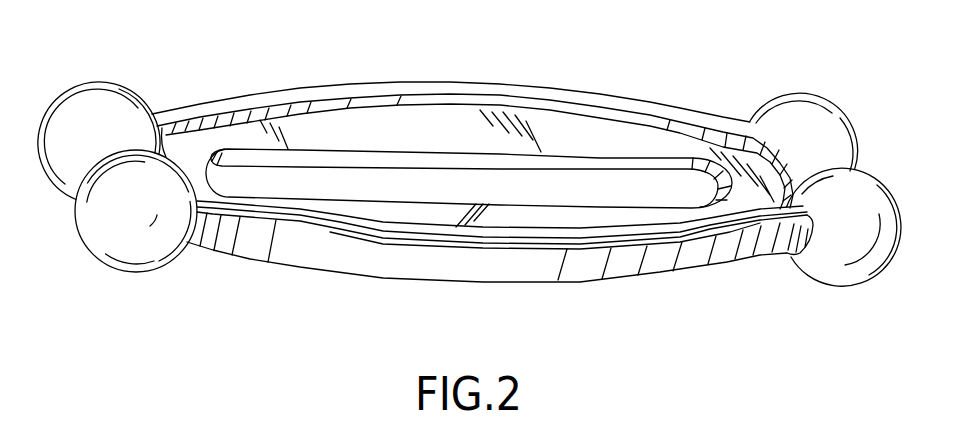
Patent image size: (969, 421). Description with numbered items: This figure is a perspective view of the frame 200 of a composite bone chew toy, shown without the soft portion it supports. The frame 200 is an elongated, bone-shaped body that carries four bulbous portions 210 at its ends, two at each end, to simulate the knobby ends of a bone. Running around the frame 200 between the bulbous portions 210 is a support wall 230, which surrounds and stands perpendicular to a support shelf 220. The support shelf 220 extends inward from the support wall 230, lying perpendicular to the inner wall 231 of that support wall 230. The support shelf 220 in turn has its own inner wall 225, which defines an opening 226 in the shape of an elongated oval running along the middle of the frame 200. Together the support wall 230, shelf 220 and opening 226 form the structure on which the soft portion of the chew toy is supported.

The frame 200 is at (663, 107).
The bulbous portions 210 is at (815, 118).
The support shelf 220 is at (373, 138).
The inner wall 225 is at (493, 163).
The opening 226 is at (428, 193).
The support wall 230 is at (261, 98).
The inner wall 231 is at (218, 120).